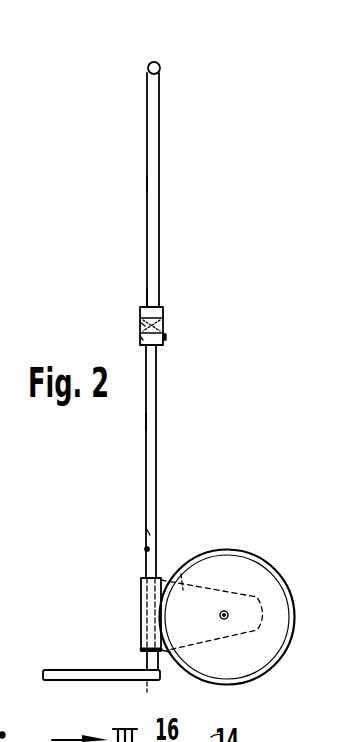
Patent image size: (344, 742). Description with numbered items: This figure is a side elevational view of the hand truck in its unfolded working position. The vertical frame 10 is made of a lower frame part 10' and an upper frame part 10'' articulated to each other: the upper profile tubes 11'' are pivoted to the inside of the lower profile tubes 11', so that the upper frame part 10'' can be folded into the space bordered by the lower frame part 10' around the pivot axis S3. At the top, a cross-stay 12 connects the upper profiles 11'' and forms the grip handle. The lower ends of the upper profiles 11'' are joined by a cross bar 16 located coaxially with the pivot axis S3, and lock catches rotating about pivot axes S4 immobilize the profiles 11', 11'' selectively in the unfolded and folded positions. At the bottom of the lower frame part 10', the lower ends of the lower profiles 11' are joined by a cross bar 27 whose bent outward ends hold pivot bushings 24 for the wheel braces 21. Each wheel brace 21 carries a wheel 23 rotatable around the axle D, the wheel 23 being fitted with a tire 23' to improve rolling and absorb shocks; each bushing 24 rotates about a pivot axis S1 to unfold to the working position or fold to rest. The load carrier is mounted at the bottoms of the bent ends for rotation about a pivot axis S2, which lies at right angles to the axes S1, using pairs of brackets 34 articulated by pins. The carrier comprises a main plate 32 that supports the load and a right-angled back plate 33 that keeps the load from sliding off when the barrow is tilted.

The vertical frame 10 is at (107, 274).
The lower frame part 10' is at (179, 461).
The upper frame part 10'' is at (177, 190).
The lower profile tubes 11' is at (113, 431).
The upper profile tubes 11'' is at (115, 196).
The cross-stay 12 is at (146, 71).
The cross bar 16 is at (165, 323).
The wheel brace 21 is at (181, 572).
The wheel 23 is at (227, 639).
The tire 23' is at (227, 590).
The pivot bushing 24 is at (136, 606).
The cross bar 27 is at (145, 550).
The main plate 32 is at (63, 670).
The back plate 33 is at (171, 655).
The brackets 34 is at (147, 670).
The axle D is at (227, 608).
The pivot axis S1 is at (143, 532).
The pivot axis S2 is at (147, 689).
The pivot axis S3 is at (140, 325).
The pivot axis S4 is at (140, 338).